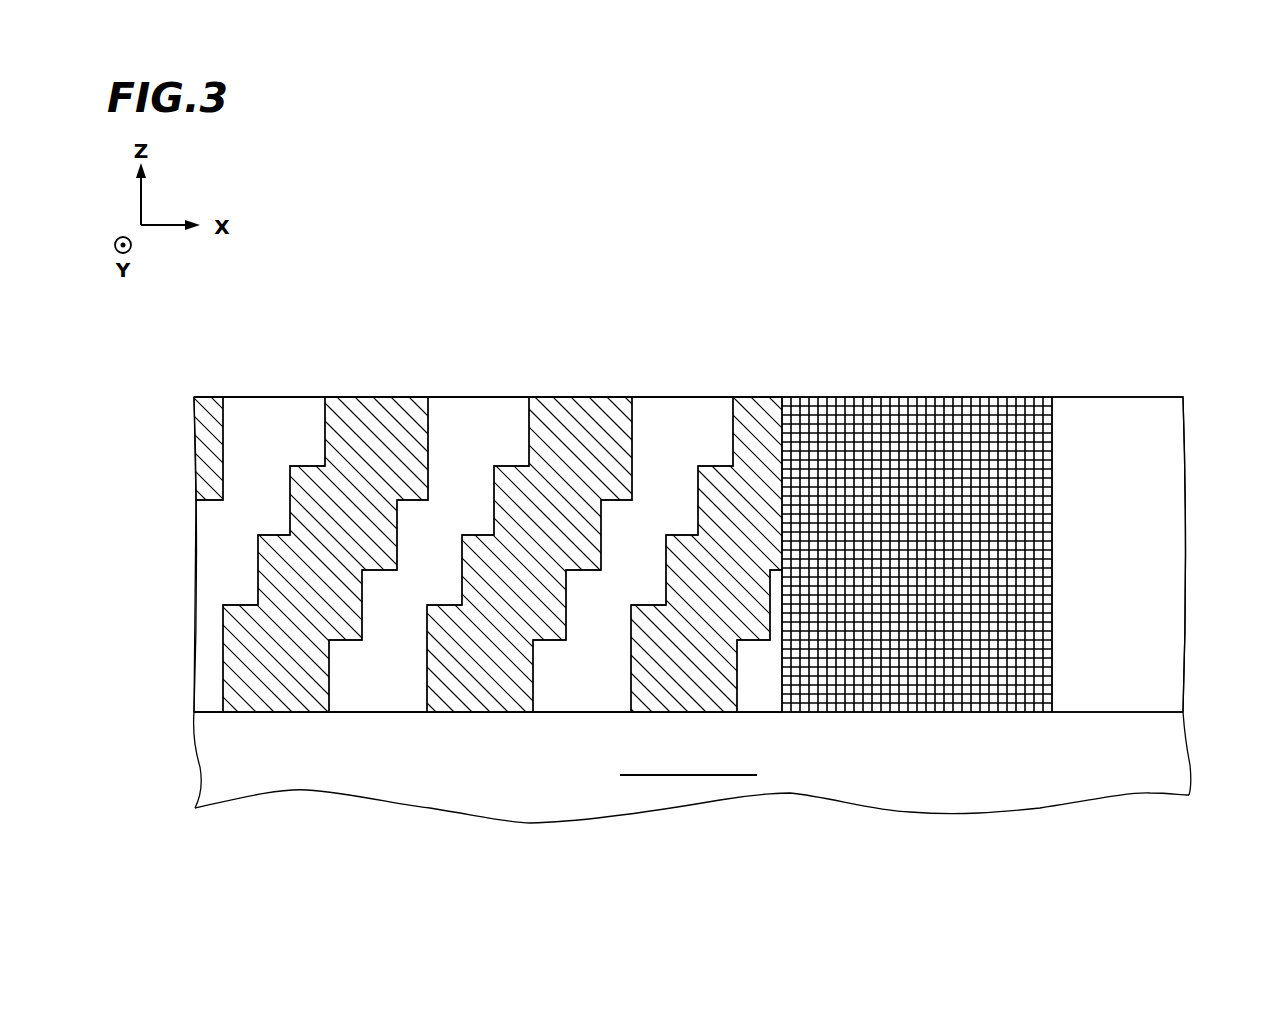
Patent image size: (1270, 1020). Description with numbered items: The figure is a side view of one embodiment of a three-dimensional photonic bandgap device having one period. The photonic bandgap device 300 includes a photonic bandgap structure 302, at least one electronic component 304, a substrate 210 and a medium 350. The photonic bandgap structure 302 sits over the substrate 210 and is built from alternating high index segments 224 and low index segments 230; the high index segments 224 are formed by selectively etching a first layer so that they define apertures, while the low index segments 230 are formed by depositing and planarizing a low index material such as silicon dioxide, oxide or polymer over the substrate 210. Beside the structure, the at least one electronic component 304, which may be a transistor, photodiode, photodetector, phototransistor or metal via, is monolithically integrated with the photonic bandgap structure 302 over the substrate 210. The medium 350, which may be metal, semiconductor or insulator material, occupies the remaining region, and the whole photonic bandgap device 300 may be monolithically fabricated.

The 3D PBG device 300 is at (1186, 203).
The substrate 210 is at (210, 770).
The high index segments 224 is at (268, 523).
The low index segments 230 is at (207, 397).
The 3D PBG structure 302 is at (782, 293).
The electronic component 304 is at (1052, 335).
The medium 350 is at (1140, 574).